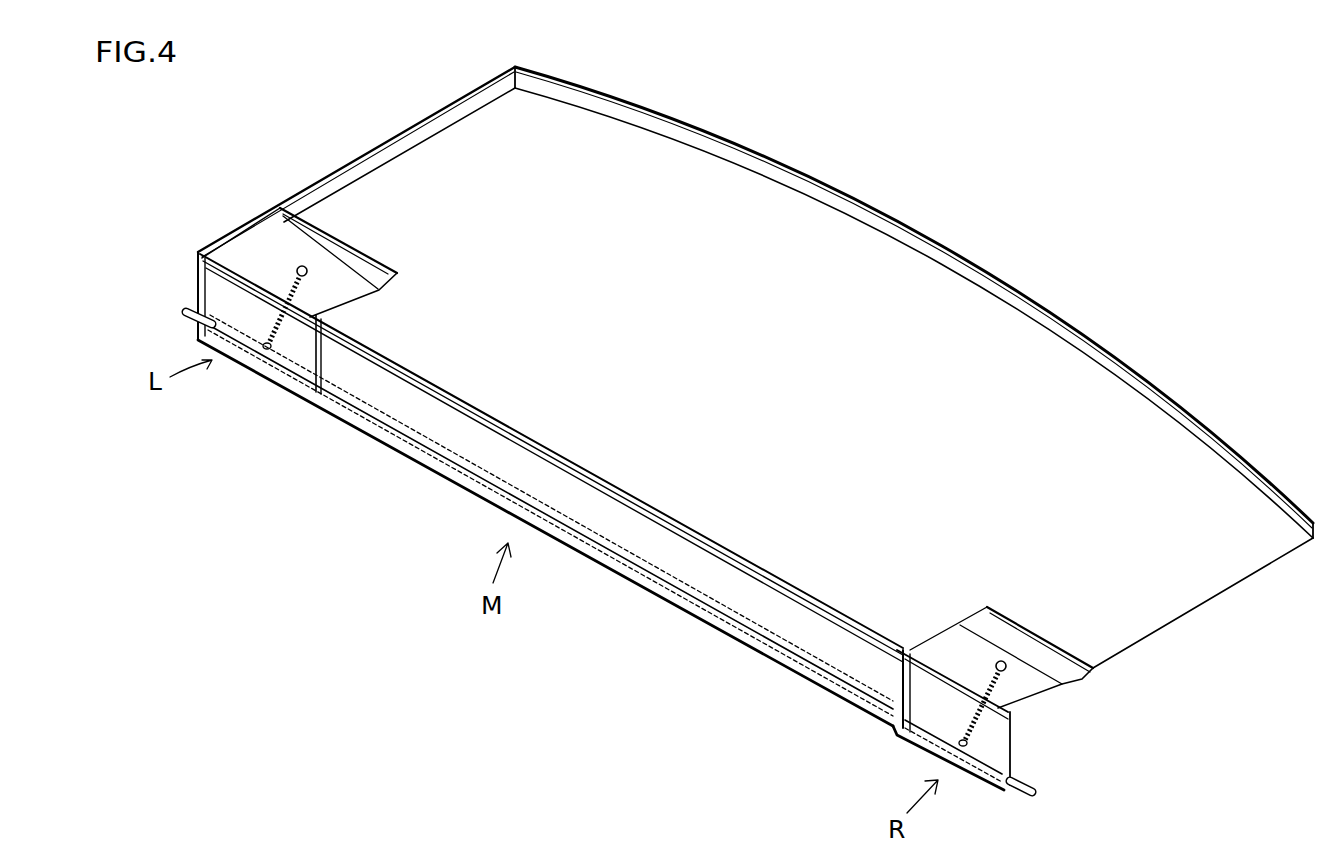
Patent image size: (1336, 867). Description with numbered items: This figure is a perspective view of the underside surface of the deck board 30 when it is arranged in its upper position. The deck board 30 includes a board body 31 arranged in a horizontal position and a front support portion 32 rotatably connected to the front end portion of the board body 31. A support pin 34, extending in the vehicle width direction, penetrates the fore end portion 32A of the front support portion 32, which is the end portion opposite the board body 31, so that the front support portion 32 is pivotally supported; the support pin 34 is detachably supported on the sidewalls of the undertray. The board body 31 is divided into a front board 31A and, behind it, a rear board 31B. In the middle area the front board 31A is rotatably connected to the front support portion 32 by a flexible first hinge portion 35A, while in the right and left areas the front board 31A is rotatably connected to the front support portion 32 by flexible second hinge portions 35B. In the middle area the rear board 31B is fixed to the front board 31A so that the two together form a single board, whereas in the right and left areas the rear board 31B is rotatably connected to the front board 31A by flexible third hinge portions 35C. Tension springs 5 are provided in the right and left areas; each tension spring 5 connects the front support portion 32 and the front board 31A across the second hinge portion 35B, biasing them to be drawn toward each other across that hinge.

The deck board 30 is at (809, 134).
The board body 31 is at (980, 318).
The front board 31A is at (247, 252).
The rear board 31B is at (375, 175).
The front support portion 32 is at (622, 533).
The fore end portion 32A is at (720, 635).
The support pin 34 is at (183, 312).
The first hinge portion 35A is at (467, 408).
The second hinge portion 35B is at (238, 278).
The third hinge portion 35C is at (322, 237).
The tension spring 5 is at (285, 345).